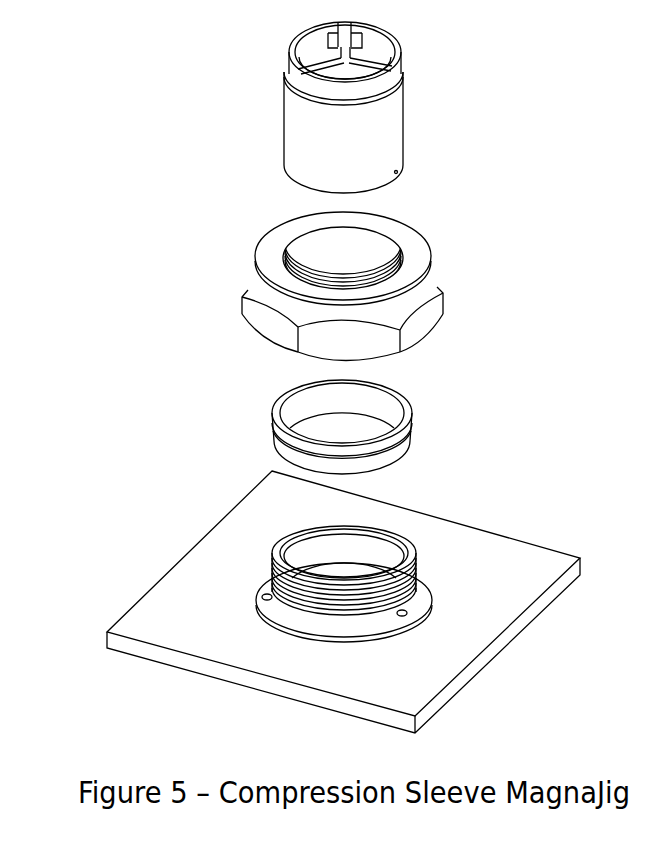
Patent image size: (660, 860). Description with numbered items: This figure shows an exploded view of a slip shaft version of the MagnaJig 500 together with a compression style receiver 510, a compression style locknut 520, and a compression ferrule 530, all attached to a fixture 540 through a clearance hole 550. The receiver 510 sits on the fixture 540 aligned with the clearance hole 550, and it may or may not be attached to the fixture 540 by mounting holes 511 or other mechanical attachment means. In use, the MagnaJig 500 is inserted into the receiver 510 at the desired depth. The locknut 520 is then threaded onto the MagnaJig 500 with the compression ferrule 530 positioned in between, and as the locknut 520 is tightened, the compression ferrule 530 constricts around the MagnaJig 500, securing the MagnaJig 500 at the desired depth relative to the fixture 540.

The MagnaJig 500 is at (414, 114).
The locknut 520 is at (234, 271).
The compression ferrule 530 is at (425, 412).
The receiver 510 is at (251, 564).
The mounting holes 511 is at (386, 617).
The fixture 540 is at (193, 622).
The clearance hole 550 is at (321, 571).